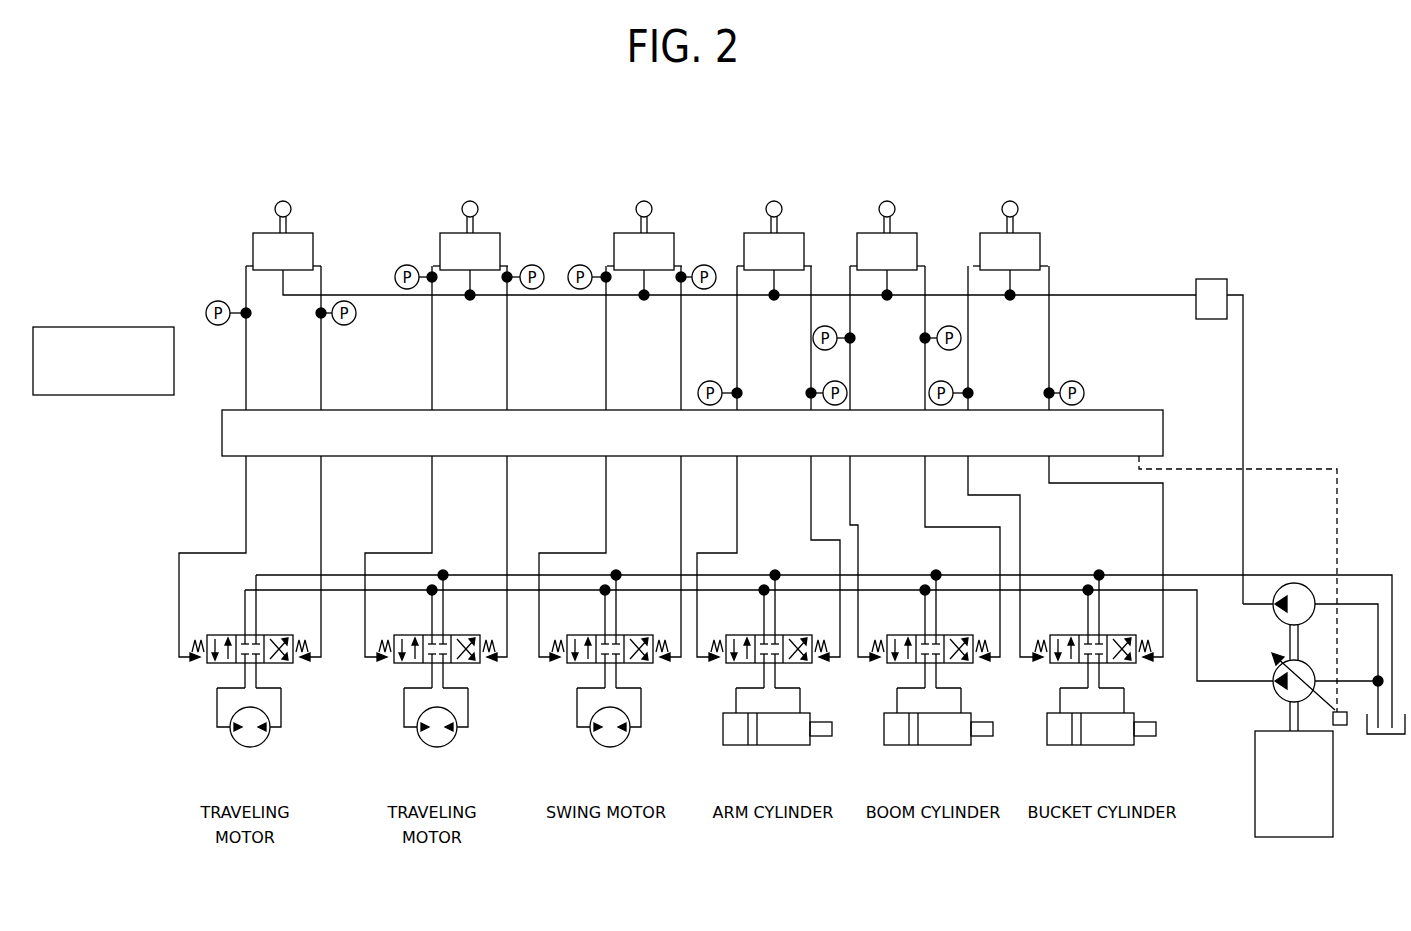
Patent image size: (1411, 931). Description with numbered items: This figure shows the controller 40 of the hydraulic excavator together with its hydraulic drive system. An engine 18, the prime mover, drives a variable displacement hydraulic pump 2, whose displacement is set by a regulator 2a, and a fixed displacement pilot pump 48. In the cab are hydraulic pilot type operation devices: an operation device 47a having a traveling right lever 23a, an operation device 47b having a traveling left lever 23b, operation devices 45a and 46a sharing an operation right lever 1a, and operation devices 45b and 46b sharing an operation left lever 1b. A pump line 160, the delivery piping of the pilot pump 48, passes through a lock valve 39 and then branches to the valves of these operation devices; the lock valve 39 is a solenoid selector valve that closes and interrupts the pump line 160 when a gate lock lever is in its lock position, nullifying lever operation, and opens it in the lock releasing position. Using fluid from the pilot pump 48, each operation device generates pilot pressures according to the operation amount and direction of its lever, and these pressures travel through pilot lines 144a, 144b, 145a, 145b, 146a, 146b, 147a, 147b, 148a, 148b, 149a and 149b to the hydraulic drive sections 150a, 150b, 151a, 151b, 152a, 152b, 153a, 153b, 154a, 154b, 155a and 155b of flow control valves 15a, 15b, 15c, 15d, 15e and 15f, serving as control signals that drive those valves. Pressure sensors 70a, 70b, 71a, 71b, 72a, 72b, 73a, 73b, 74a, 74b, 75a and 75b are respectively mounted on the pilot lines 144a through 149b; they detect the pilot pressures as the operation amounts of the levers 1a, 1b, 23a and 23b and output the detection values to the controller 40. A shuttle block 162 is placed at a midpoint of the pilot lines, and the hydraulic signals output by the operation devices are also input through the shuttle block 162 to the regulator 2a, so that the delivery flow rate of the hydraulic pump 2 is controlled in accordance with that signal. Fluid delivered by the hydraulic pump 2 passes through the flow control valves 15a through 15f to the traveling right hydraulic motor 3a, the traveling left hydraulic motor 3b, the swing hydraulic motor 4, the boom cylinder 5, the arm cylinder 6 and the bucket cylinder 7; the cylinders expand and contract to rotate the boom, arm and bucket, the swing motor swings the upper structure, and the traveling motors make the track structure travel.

The controller 40 is at (118, 396).
The shuttle block 162 is at (222, 432).
The traveling right lever 23a is at (287, 200).
The traveling left lever 23b is at (474, 200).
The operation right lever 1a is at (890, 200).
The operation left lever 1b is at (648, 200).
The operation device 47a is at (306, 233).
The operation device 47b is at (493, 233).
The operation device 46a is at (1030, 233).
The operation device 46b is at (666, 233).
The operation device 45a is at (909, 233).
The operation device 45b is at (796, 233).
The pressure sensor 74a is at (208, 306).
The pressure sensor 74b is at (356, 311).
The pressure sensor 75a is at (397, 272).
The pressure sensor 75b is at (546, 258).
The pressure sensor 73a is at (583, 258).
The pressure sensor 73b is at (722, 260).
The pressure sensor 70a is at (828, 318).
The pressure sensor 70b is at (952, 318).
The pressure sensor 71a is at (704, 381).
The pressure sensor 71b is at (838, 374).
The pressure sensor 72a is at (947, 374).
The pressure sensor 72b is at (1075, 374).
The pilot line 148a is at (246, 382).
The pilot line 148b is at (321, 376).
The pilot line 149a is at (432, 382).
The pilot line 149b is at (507, 376).
The pilot line 147a is at (606, 324).
The pilot line 147b is at (681, 318).
The pilot line 145a is at (738, 318).
The pilot line 145b is at (813, 286).
The pilot line 144a is at (852, 318).
The pilot line 144b is at (927, 286).
The pilot line 146a is at (970, 318).
The pilot line 146b is at (1051, 318).
The pump line 160 is at (1120, 295).
The lock valve 39 is at (1219, 279).
The flow control valve 15a is at (889, 666).
The flow control valve 15b is at (728, 666).
The flow control valve 15c is at (1052, 666).
The flow control valve 15d is at (569, 666).
The flow control valve 15e is at (209, 666).
The flow control valve 15f is at (396, 666).
The hydraulic drive section 154a is at (197, 664).
The hydraulic drive section 154b is at (297, 666).
The hydraulic drive section 155a is at (384, 664).
The hydraulic drive section 155b is at (484, 666).
The hydraulic drive section 153a is at (557, 664).
The hydraulic drive section 153b is at (657, 666).
The hydraulic drive section 151a is at (716, 664).
The hydraulic drive section 151b is at (816, 666).
The hydraulic drive section 150a is at (877, 664).
The hydraulic drive section 150b is at (977, 666).
The hydraulic drive section 152a is at (1040, 664).
The hydraulic drive section 152b is at (1140, 666).
The traveling right hydraulic motor 3a is at (248, 747).
The traveling left hydraulic motor 3b is at (435, 747).
The swing hydraulic motor 4 is at (608, 747).
The boom cylinder 5 is at (907, 746).
The arm cylinder 6 is at (746, 746).
The bucket cylinder 7 is at (1070, 746).
The pilot pump 48 is at (1278, 618).
The hydraulic pump 2 is at (1277, 697).
The regulator 2a is at (1341, 726).
The engine 18 is at (1290, 838).